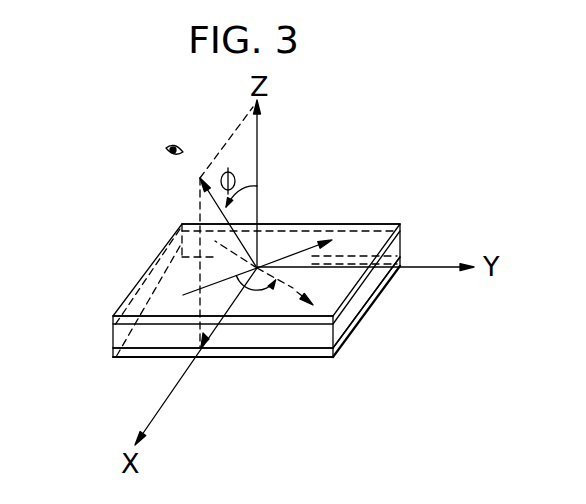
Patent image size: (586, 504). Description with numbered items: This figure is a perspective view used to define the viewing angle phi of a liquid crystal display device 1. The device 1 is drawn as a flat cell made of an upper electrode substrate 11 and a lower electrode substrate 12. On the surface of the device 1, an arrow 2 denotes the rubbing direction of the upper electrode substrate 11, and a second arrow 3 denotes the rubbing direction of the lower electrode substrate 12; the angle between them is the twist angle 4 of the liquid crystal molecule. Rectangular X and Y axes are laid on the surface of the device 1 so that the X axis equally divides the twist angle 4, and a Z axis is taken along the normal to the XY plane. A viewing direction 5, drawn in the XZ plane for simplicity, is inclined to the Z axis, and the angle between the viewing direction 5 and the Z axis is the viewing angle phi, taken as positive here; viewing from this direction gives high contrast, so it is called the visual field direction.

The liquid crystal display device 1 is at (352, 222).
The upper electrode substrate 11 is at (388, 223).
The lower electrode substrate 12 is at (402, 243).
The rubbing direction of upper electrode substrate 2 is at (294, 252).
The rubbing direction of lower electrode substrate 3 is at (293, 288).
The twist angle of liquid crystal molecule 4 is at (259, 286).
The viewing direction 5 is at (212, 197).